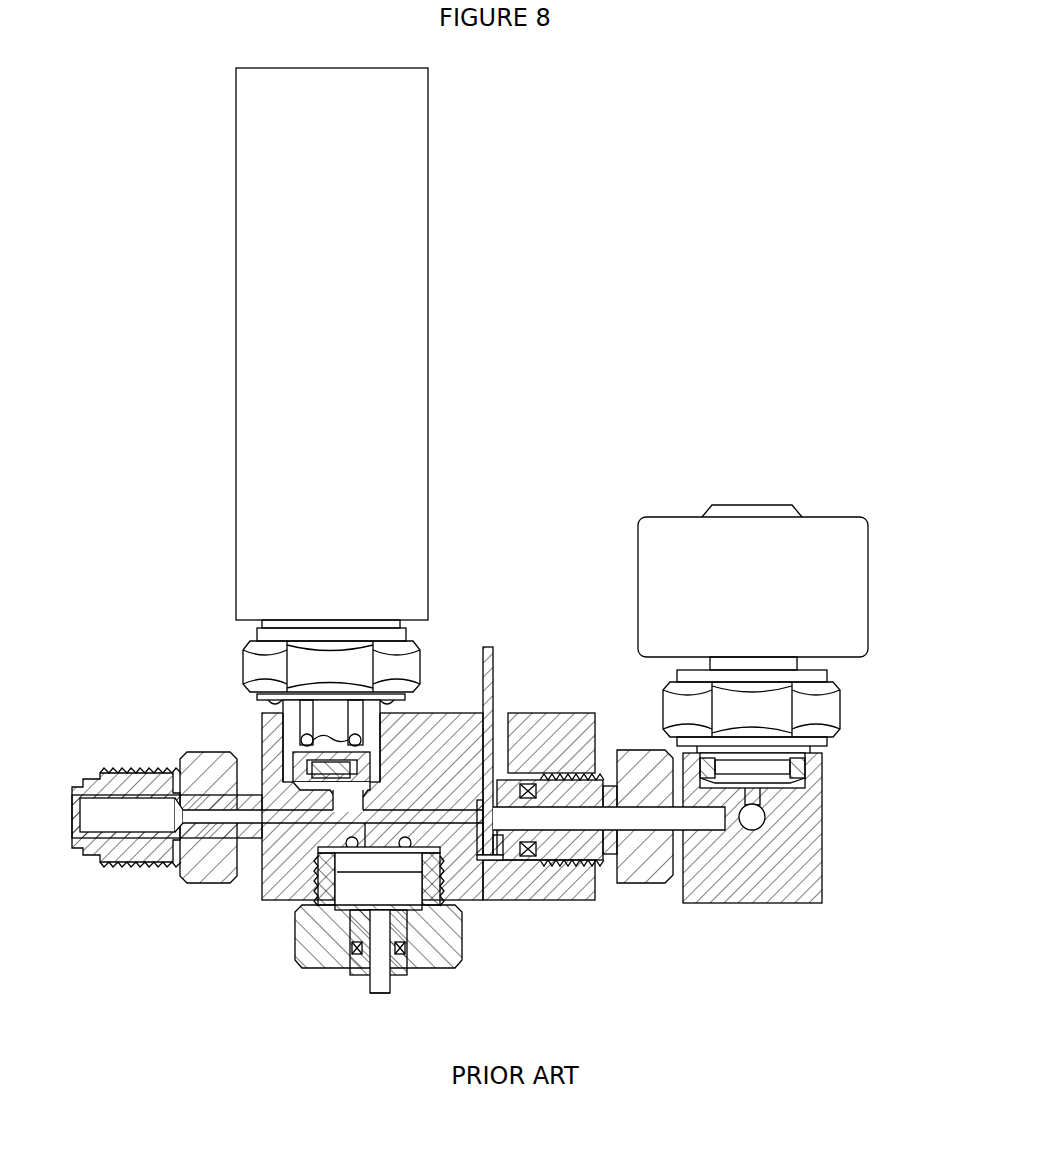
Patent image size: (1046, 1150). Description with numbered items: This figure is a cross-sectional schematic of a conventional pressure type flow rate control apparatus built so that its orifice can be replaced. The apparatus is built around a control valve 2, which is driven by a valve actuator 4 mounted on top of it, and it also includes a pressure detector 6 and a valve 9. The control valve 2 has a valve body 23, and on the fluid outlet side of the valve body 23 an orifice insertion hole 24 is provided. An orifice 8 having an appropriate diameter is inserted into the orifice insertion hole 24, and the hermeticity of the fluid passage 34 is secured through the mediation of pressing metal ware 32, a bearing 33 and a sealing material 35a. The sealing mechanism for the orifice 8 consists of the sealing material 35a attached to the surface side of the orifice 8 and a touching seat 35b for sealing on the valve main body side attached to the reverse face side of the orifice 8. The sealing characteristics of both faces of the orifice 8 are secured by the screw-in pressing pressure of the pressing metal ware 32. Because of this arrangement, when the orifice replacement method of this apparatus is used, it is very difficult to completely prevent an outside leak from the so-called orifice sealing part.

The control valve 2 is at (277, 806).
The valve actuator 4 is at (430, 393).
The pressure detector 6 is at (372, 862).
The orifice 8 is at (492, 660).
The valve 9 is at (851, 702).
The valve body 23 is at (437, 712).
The orifice insertion hole 24 is at (501, 723).
The pressing metal ware 32 is at (648, 868).
The bearing 33 is at (534, 857).
The fluid passage 34 is at (583, 824).
The sealing material 35a is at (505, 840).
The touching seat 35b is at (479, 846).